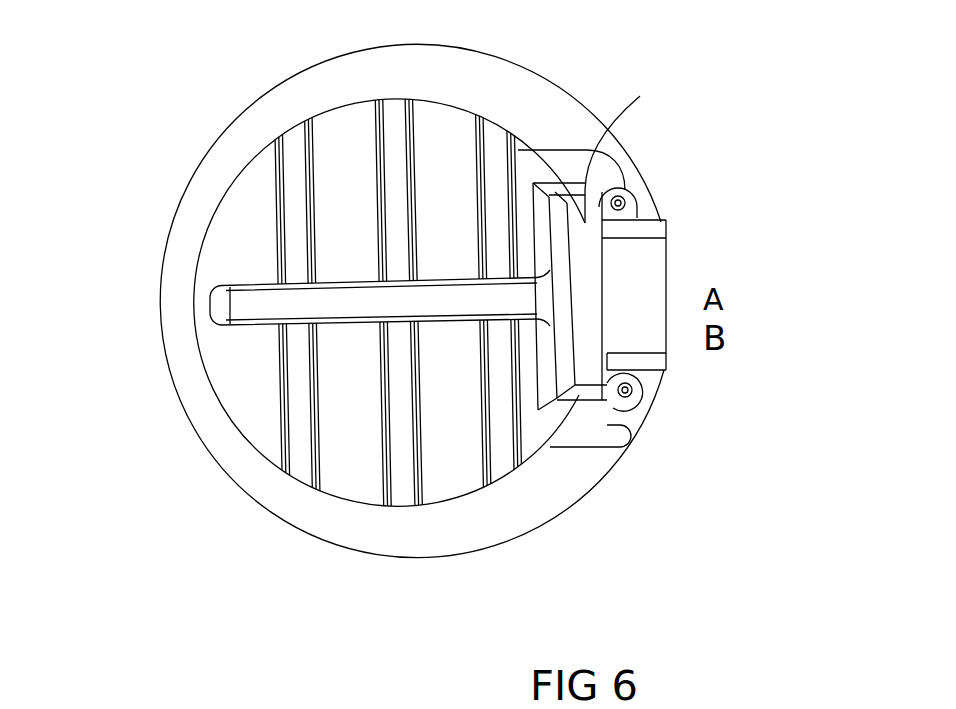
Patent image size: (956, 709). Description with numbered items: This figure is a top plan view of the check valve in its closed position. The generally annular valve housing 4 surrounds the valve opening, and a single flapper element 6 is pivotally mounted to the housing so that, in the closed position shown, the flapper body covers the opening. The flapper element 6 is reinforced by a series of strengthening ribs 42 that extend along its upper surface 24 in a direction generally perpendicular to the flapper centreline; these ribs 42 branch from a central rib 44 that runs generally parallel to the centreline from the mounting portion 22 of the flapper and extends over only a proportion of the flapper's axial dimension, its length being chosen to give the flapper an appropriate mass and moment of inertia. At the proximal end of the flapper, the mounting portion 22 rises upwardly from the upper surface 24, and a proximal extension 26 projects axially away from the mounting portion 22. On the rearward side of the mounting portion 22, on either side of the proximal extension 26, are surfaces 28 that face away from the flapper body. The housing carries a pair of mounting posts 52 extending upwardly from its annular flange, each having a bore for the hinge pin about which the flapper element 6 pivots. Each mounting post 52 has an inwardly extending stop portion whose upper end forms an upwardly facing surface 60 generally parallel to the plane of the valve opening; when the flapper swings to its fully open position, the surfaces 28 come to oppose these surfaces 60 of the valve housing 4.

The valve housing 4 is at (592, 466).
The flapper element 6 is at (447, 146).
The mounting portion 22 is at (640, 96).
The upper surface 24 is at (548, 450).
The proximal extension 26 is at (653, 287).
The surfaces 28 is at (630, 198).
The strengthening ribs 42 is at (305, 463).
The central rib 44 is at (238, 312).
The mounting posts 52 is at (604, 168).
The upwardly facing surface 60 is at (634, 201).